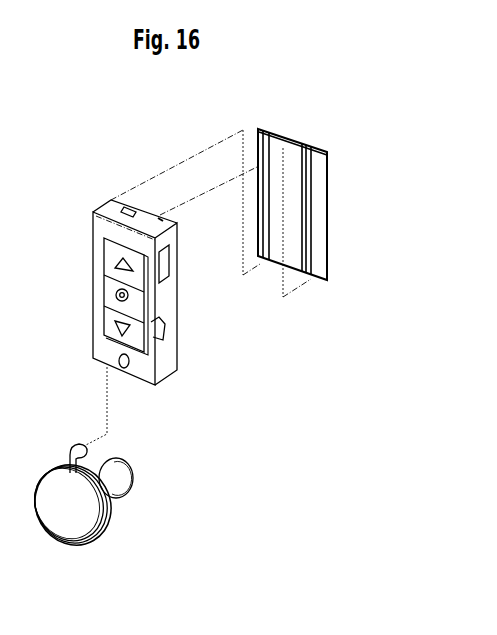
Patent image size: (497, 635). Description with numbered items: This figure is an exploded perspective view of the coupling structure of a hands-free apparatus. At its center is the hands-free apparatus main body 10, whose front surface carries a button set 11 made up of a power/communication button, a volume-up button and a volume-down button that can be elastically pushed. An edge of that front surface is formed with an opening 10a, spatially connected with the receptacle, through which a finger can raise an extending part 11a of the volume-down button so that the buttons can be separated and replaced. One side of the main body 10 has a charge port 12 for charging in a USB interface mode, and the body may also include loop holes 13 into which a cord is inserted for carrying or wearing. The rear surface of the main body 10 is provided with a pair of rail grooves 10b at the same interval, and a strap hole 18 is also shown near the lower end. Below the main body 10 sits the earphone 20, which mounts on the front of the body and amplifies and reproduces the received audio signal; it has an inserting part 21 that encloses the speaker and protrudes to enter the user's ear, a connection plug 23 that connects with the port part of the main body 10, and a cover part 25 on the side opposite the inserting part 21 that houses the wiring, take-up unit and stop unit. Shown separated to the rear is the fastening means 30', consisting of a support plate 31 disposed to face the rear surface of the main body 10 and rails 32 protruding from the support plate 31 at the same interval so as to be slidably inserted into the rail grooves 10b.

The hands-free apparatus main body 10 is at (91, 196).
The opening 10a is at (162, 329).
The rail grooves 10b is at (126, 206).
The button set 11 is at (112, 262).
The extending part 11a is at (149, 339).
The charge port 12 is at (167, 264).
The loop holes 13 is at (93, 214).
The strap hole 18 is at (127, 370).
The earphone 20 is at (105, 549).
The inserting part 21 is at (117, 478).
The connection plug 23 is at (73, 442).
The cover part 25 is at (113, 510).
The fastening means 30' is at (265, 180).
The support plate 31 is at (320, 139).
The rails 32 is at (305, 152).